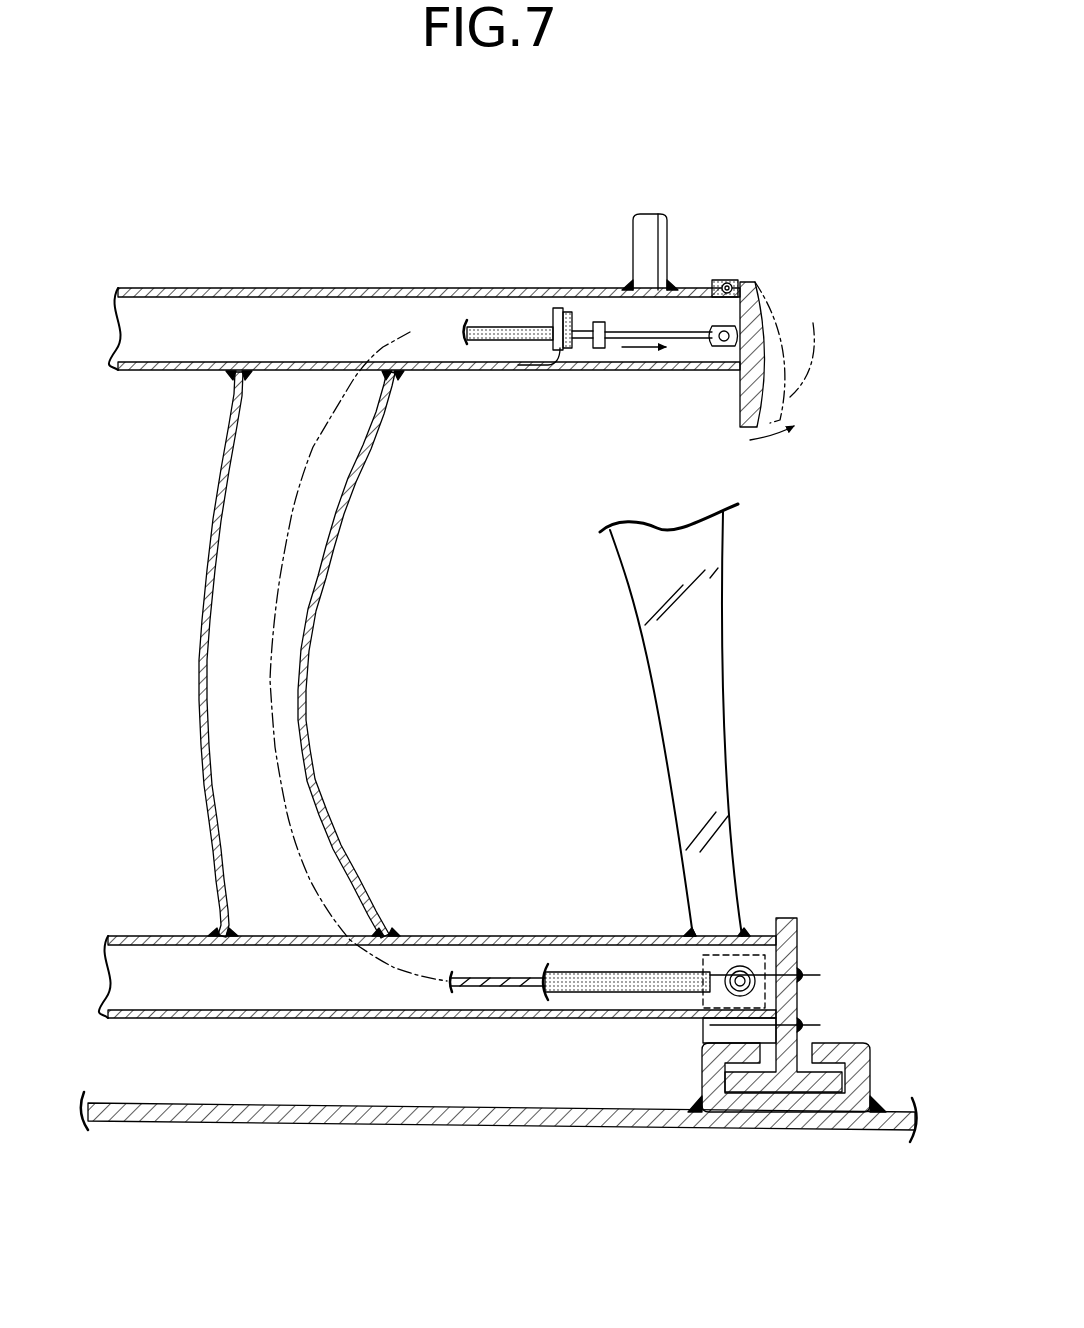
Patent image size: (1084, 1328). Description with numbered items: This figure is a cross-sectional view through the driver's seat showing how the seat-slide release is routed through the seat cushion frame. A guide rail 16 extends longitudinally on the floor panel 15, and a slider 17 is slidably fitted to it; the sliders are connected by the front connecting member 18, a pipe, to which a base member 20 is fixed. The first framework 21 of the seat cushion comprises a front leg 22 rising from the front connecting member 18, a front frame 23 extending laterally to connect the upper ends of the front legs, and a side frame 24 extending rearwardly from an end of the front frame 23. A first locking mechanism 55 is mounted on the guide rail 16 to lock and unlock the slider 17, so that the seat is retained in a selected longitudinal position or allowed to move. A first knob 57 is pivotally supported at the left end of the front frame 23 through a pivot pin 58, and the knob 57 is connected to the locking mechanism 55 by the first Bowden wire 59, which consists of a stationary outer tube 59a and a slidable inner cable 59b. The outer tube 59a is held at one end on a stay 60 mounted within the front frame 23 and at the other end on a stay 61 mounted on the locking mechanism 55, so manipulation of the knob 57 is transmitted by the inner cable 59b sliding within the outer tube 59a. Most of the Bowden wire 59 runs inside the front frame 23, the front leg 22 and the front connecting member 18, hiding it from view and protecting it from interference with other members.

The floor panel 15 is at (450, 1105).
The guide rail 16 is at (843, 1045).
The slider 17 is at (795, 935).
The front connecting member 18 is at (285, 1018).
The base member 20 is at (704, 692).
The first framework 21 is at (280, 268).
The front leg 22 is at (200, 605).
The front frame 23 is at (358, 290).
The side frame 24 is at (662, 240).
The first locking mechanism 55 is at (715, 1030).
The first knob 57 is at (765, 357).
The pivot pin 58 is at (730, 283).
The first Bowden wire 59 is at (608, 850).
The outer tube 59a is at (595, 972).
The inner cable 59b is at (478, 978).
The stay 60 is at (562, 320).
The stay 61 is at (682, 940).